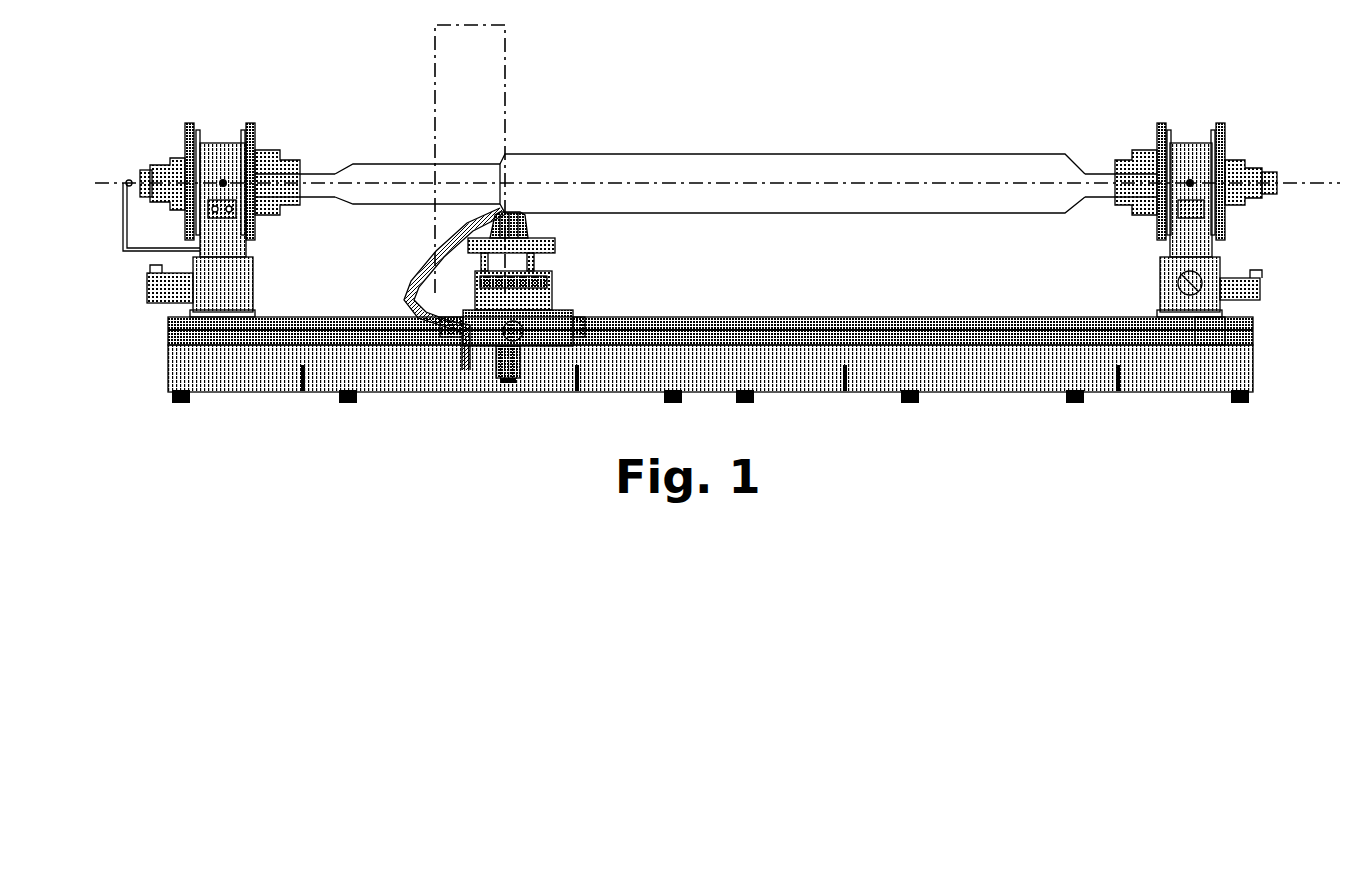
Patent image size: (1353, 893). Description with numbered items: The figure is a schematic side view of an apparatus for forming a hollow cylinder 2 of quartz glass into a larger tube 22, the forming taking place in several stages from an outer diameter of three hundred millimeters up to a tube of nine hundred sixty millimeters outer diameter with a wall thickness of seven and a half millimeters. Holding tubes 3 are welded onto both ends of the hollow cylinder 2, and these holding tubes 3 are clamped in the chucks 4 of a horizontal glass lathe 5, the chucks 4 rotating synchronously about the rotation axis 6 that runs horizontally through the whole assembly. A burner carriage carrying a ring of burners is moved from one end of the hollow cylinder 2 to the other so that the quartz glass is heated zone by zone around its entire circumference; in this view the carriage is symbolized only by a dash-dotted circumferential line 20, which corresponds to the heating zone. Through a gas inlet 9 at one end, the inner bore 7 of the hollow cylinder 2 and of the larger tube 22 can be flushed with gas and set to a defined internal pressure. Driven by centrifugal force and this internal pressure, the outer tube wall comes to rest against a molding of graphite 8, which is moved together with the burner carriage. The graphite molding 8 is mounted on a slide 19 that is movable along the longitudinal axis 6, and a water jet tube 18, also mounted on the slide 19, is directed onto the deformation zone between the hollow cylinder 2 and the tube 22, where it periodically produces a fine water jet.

The hollow cylinder 2 is at (400, 175).
The holding tubes 3 is at (318, 178).
The chucks 4 is at (223, 150).
The horizontal glass lathe 5 is at (286, 102).
The rotation axis 6 is at (121, 181).
The inner bore 7 is at (912, 198).
The molding of graphite 8 is at (527, 228).
The gas inlet 9 is at (172, 181).
The water jet tube 18 is at (410, 292).
The slide 19 is at (508, 348).
The dash-dotted circumferential line 20 is at (485, 116).
The larger tube 22 is at (735, 160).